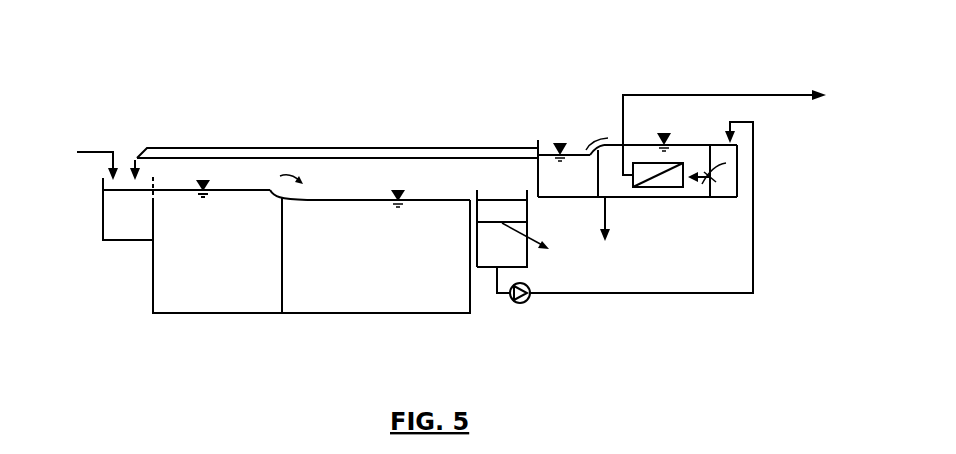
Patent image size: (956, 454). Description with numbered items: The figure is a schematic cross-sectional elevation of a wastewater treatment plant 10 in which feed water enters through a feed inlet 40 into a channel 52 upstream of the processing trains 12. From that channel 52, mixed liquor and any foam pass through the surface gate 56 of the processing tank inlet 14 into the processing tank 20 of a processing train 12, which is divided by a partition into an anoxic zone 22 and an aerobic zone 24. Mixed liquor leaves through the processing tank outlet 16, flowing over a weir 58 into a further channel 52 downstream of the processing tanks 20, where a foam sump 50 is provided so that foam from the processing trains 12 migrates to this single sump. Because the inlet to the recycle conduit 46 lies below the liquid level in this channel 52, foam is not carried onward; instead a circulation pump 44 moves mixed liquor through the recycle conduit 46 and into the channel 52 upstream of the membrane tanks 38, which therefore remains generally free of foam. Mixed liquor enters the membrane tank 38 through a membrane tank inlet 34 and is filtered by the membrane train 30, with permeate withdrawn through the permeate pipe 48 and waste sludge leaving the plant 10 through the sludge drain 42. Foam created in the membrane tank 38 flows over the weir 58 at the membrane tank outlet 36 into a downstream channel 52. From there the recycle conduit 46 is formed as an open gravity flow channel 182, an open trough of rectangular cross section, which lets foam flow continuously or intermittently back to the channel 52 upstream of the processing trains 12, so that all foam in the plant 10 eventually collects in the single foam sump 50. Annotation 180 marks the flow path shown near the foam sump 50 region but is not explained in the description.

The treatment plant 10 is at (138, 341).
The processing train 12 is at (232, 315).
The processing tank inlet 14 is at (147, 197).
The processing tank outlet 16 is at (470, 202).
The processing tank 20 is at (333, 315).
The anoxic zone 22 is at (213, 226).
The aerobic zone 24 is at (370, 231).
The membrane train 30 is at (658, 190).
The membrane tank inlet 34 is at (723, 190).
The membrane tank outlet 36 is at (597, 146).
The membrane tank 38 is at (692, 148).
The feed inlet 40 is at (95, 152).
The sludge drain 42 is at (608, 217).
The circulation pump 44 is at (524, 304).
The recycle conduit 46 is at (473, 148).
The permeate pipe 48 is at (683, 93).
The foam sump 50 is at (477, 223).
The channel 52 is at (102, 213).
The surface gate 56 is at (315, 188).
The weir 58 is at (270, 183).
The flow path 180 is at (540, 234).
The open channel 182 is at (300, 148).